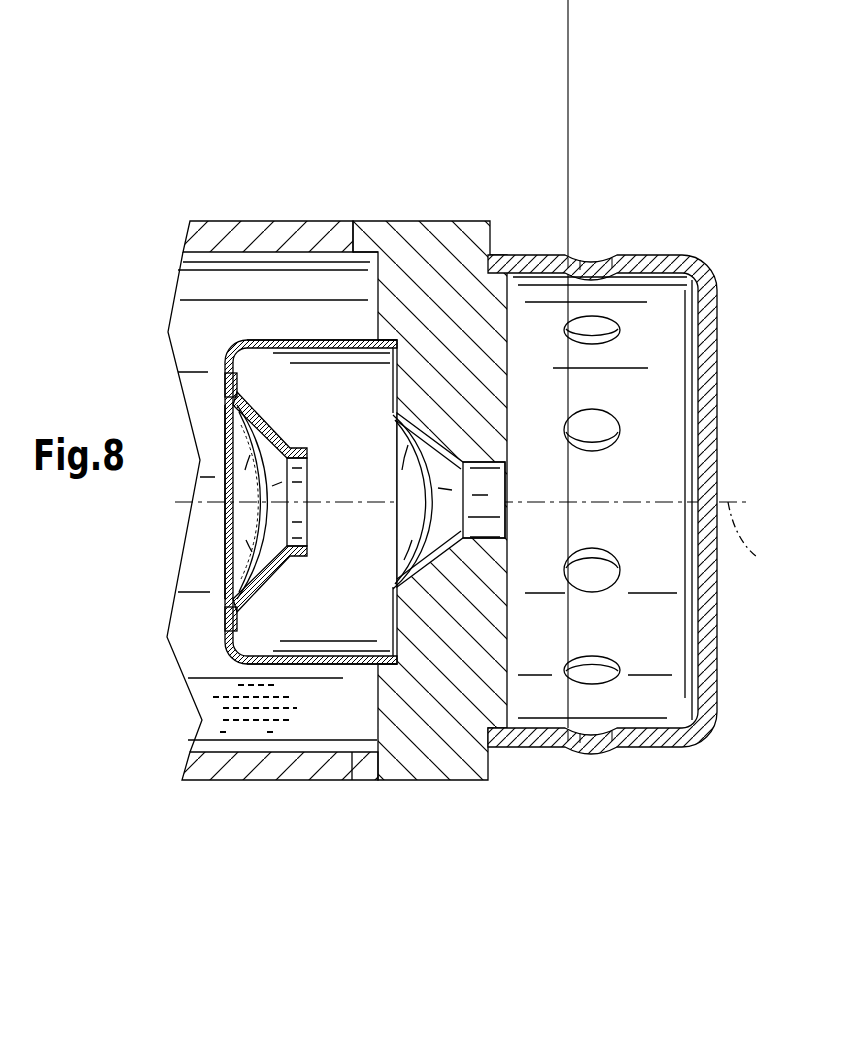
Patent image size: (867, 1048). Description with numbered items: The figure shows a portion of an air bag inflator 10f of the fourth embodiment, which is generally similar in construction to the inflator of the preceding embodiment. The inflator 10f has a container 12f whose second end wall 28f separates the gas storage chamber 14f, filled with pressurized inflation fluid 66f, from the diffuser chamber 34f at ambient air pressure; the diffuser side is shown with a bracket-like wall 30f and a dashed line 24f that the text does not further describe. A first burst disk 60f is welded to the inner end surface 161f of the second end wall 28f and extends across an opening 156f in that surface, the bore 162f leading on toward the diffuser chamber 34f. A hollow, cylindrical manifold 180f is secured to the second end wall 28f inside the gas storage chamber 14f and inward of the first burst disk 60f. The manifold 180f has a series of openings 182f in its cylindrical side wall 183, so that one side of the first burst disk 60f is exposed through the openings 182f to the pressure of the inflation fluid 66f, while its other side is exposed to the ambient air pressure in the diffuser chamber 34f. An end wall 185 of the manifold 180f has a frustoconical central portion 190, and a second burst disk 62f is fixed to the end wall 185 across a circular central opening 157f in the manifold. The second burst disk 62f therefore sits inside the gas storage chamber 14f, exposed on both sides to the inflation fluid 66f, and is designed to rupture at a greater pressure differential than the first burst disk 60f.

The inflator 10f is at (532, 838).
The container 12f is at (441, 799).
The gas storage chamber 14f is at (327, 723).
The cable 24f is at (768, 536).
The second end wall 28f is at (453, 221).
The bracket 30f is at (707, 265).
The diffuser chamber 34f is at (652, 313).
The first burst disk 60f is at (467, 522).
The second burst disk 62f is at (224, 559).
The inflation fluid 66f is at (247, 707).
The opening 156f is at (390, 448).
The circular central opening 157f is at (223, 443).
The inner end surface 161f is at (397, 364).
The bore 162f is at (487, 486).
The manifold 180f is at (226, 340).
The openings 182f is at (317, 340).
The cylindrical side wall 183 is at (280, 340).
The end wall 185 is at (223, 633).
The frustoconical central portion 190 is at (255, 587).